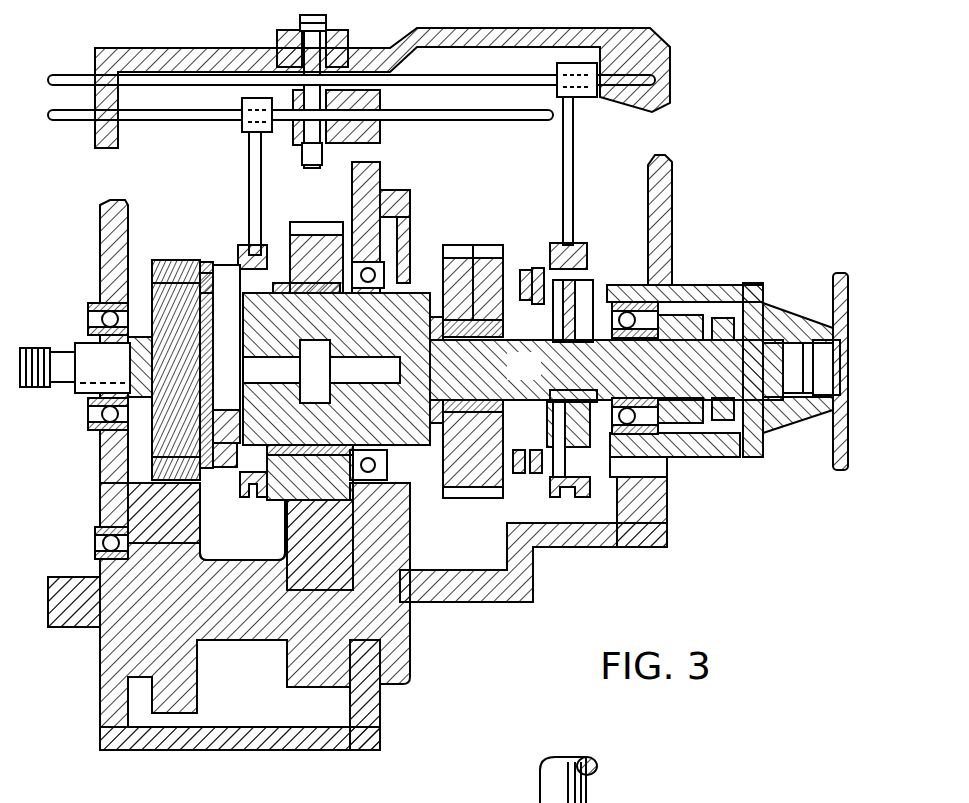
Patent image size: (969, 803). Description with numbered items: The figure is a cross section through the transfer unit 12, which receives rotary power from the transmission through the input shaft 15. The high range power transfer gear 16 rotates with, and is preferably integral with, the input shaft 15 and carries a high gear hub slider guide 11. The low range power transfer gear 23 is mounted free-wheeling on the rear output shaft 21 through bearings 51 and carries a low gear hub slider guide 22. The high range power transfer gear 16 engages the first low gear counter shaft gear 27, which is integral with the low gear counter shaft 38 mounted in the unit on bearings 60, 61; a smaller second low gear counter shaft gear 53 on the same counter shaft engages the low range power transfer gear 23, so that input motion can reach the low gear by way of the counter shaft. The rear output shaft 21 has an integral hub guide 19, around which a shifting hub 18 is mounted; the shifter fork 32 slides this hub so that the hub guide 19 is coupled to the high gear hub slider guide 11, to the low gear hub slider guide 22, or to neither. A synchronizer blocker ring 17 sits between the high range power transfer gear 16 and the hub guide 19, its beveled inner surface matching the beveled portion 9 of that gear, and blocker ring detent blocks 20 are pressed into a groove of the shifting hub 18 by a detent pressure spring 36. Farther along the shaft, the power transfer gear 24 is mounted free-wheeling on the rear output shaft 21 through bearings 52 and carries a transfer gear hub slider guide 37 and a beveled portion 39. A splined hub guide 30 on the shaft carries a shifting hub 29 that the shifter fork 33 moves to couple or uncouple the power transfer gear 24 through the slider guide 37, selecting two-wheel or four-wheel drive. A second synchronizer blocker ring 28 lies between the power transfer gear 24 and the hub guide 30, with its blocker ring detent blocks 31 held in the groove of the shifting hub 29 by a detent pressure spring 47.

The beveled portion 9 is at (100, 270).
The high gear hub slider guide 11 is at (222, 312).
The transfer unit 12 is at (96, 182).
The input shaft 15 is at (62, 392).
The high range power transfer gear 16 is at (152, 443).
The synchronizer blocker ring 17 is at (228, 310).
The shifting hub 18 is at (238, 252).
The hub guide 19 is at (240, 474).
The blocker ring detent blocks 20 is at (258, 255).
The rear output shaft 21 is at (477, 372).
The low gear hub slider guide 22 is at (240, 468).
The low range power transfer gear 23 is at (345, 505).
The power transfer gear 24 is at (453, 322).
The first low gear counter shaft gear 27 is at (170, 505).
The synchronizer blocker ring 28 is at (530, 300).
The shifting hub 29 is at (600, 257).
The hub guide 30 is at (612, 437).
The blocker ring detent blocks 31 is at (620, 268).
The shifter fork 32 is at (248, 152).
The shifter fork 33 is at (575, 150).
The detent pressure spring 36 is at (250, 437).
The transfer gear hub slider guide 37 is at (538, 300).
The low gear counter shaft 38 is at (80, 600).
The beveled portion 39 is at (635, 370).
The detent pressure spring 47 is at (570, 485).
The bearings 51 is at (318, 290).
The bearings 52 is at (487, 322).
The second low gear counter shaft gear 53 is at (318, 667).
The bearing 60 is at (377, 647).
The bearing 61 is at (100, 533).